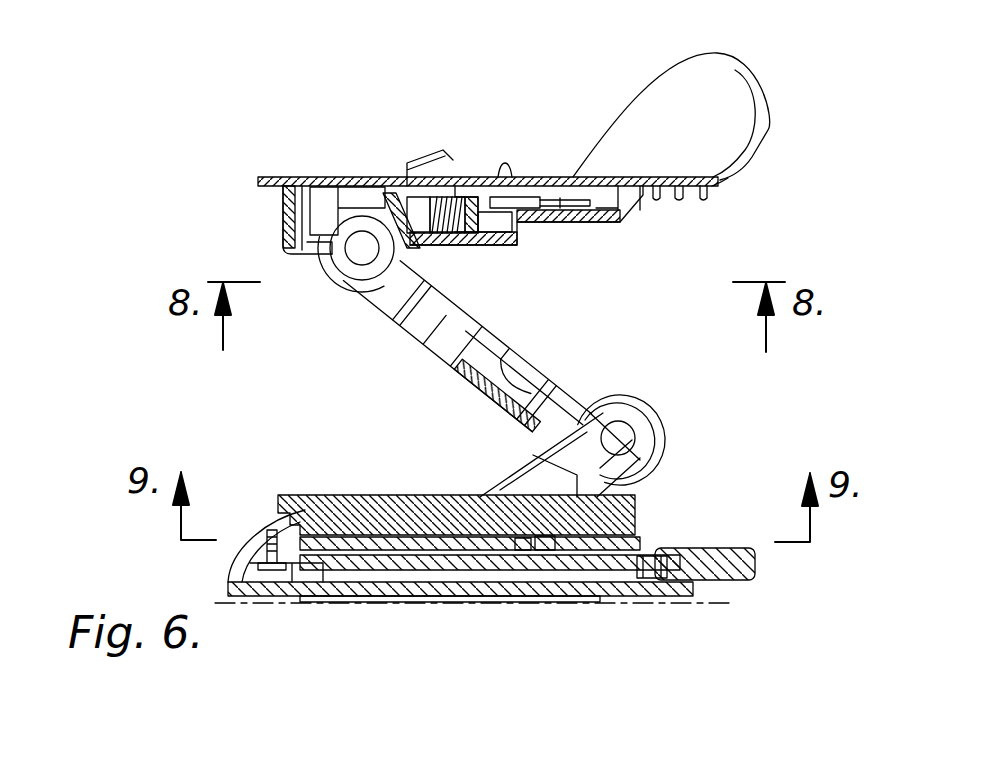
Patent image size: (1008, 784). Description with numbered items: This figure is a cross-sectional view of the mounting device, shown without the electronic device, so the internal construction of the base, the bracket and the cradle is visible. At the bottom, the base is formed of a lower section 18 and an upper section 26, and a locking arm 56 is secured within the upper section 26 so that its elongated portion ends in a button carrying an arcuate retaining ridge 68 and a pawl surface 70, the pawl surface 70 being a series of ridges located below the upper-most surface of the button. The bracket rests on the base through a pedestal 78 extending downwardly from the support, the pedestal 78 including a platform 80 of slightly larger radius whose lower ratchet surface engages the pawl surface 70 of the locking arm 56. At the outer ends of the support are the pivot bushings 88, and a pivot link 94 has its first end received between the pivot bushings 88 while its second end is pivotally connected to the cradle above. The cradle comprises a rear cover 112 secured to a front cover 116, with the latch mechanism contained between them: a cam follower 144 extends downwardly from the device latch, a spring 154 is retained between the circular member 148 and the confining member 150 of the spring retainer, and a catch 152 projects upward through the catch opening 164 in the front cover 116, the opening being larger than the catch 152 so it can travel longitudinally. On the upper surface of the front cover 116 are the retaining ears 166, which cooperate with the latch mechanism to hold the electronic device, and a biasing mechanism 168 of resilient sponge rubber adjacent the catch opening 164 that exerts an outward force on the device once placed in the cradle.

The lower section 18 is at (283, 594).
The upper section 26 is at (235, 561).
The locking arm 56 is at (752, 571).
The arcuate retaining ridge 68 is at (545, 541).
The pawl surface 70 is at (522, 538).
The pedestal 78 is at (520, 519).
The platform 80 is at (323, 533).
The pivot bushings 88 is at (640, 408).
The pivot link 94 is at (456, 380).
The rear cover 112 is at (605, 212).
The front cover 116 is at (730, 180).
The cam follower 144 is at (556, 208).
The circular member 148 is at (470, 228).
The confining member 150 is at (412, 232).
The catch 152 is at (425, 155).
The spring 154 is at (455, 195).
The catch opening 164 is at (467, 182).
The retaining ears 166 is at (712, 58).
The biasing mechanism 168 is at (512, 172).